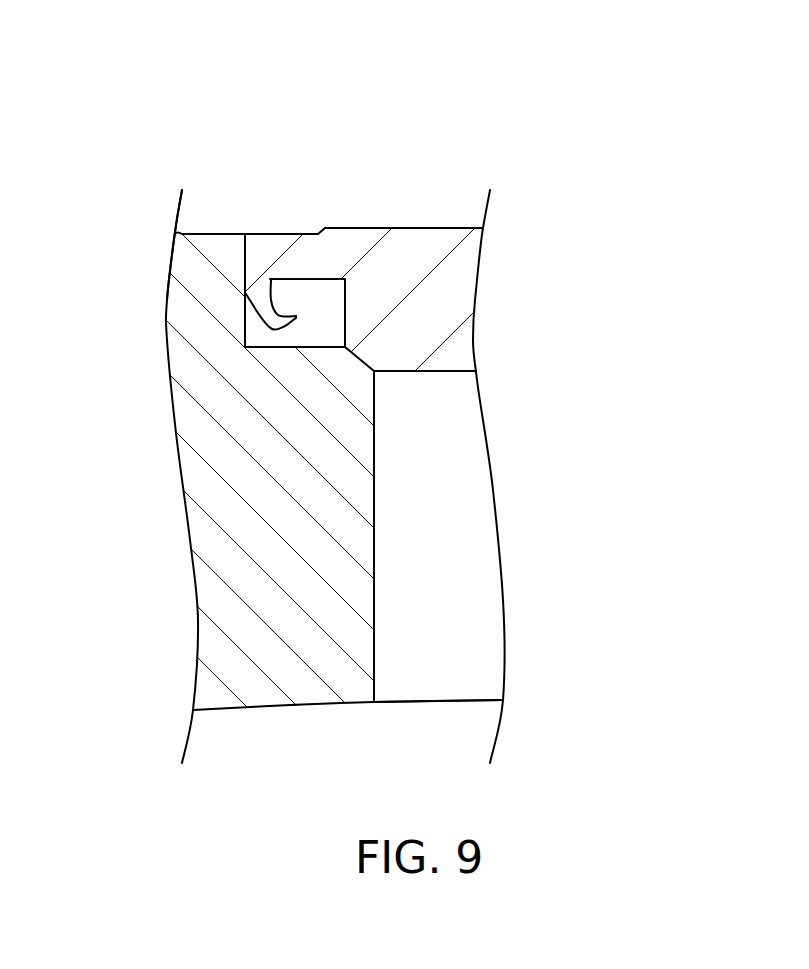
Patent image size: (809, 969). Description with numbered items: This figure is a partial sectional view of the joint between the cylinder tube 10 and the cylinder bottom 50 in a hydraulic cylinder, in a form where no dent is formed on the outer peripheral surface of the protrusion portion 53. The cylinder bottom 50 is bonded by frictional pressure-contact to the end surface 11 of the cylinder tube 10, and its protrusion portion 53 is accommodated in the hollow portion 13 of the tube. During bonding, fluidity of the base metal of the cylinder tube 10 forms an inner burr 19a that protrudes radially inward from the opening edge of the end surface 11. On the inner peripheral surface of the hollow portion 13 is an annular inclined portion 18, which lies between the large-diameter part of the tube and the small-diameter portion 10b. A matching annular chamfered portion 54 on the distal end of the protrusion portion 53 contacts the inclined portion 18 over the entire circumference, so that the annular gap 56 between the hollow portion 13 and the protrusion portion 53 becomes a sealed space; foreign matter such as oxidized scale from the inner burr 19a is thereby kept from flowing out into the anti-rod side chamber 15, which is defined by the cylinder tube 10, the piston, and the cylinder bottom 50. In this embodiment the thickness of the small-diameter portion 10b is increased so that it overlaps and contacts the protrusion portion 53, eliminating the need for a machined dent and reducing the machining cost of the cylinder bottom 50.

The cylinder tube 10 is at (467, 229).
The small-diameter portion 10b is at (402, 260).
The end surface 11 is at (245, 262).
The hollow portion 13 is at (458, 372).
The anti-rod side chamber 15 is at (453, 598).
The inclined portion 18 is at (358, 366).
The inner burr 19a is at (188, 296).
The cylinder bottom 50 is at (247, 710).
The protrusion portion 53 is at (338, 516).
The chamfered portion 54 is at (385, 348).
The gap 56 is at (290, 296).